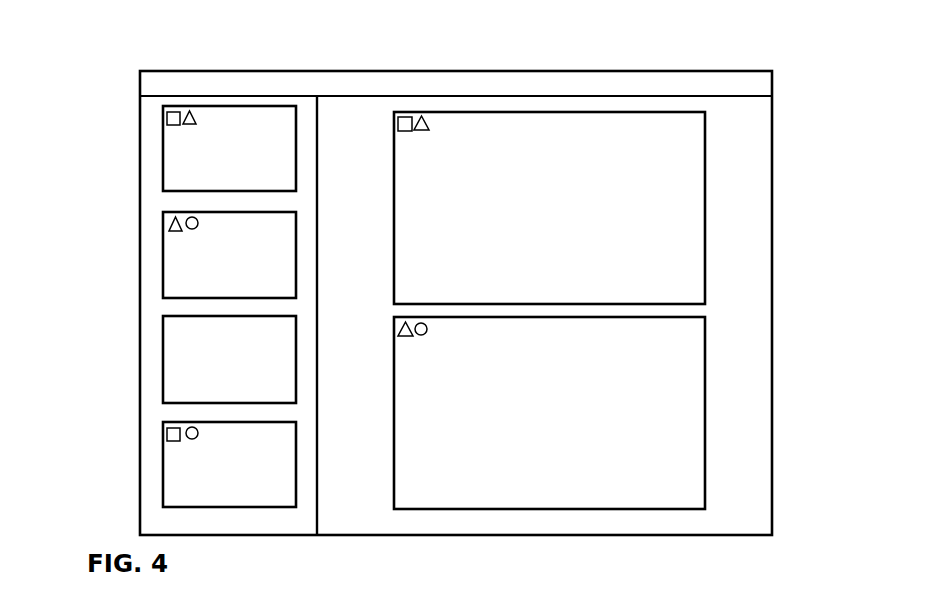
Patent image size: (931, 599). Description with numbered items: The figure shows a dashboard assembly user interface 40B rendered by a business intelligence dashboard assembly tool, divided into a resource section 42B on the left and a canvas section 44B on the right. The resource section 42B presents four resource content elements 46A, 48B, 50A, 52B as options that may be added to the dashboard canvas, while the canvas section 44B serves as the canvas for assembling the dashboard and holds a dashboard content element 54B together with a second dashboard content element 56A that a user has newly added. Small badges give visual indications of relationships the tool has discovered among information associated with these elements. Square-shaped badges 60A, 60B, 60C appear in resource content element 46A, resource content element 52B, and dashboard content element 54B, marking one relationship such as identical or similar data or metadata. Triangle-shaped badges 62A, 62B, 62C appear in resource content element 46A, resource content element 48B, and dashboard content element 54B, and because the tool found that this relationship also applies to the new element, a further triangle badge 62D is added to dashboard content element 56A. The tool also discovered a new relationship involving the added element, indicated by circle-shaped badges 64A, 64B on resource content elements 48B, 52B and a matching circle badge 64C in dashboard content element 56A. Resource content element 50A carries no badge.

The dashboard assembly user interface 40B is at (148, 62).
The resource section 42B is at (127, 97).
The canvas section 44B is at (782, 97).
The resource content element 46A is at (171, 148).
The resource content element 48B is at (171, 255).
The resource content element 50A is at (171, 359).
The resource content element 52B is at (171, 464).
The dashboard content element 54B is at (578, 205).
The second dashboard content element 56A is at (578, 413).
The badge 60A is at (189, 144).
The badge 60B is at (190, 460).
The badge 60C is at (420, 150).
The badge 62A is at (224, 126).
The badge 62B is at (191, 249).
The badge 62C is at (455, 131).
The badge 62D is at (422, 355).
The badge 64A is at (227, 229).
The badge 64B is at (227, 439).
The badge 64C is at (456, 334).